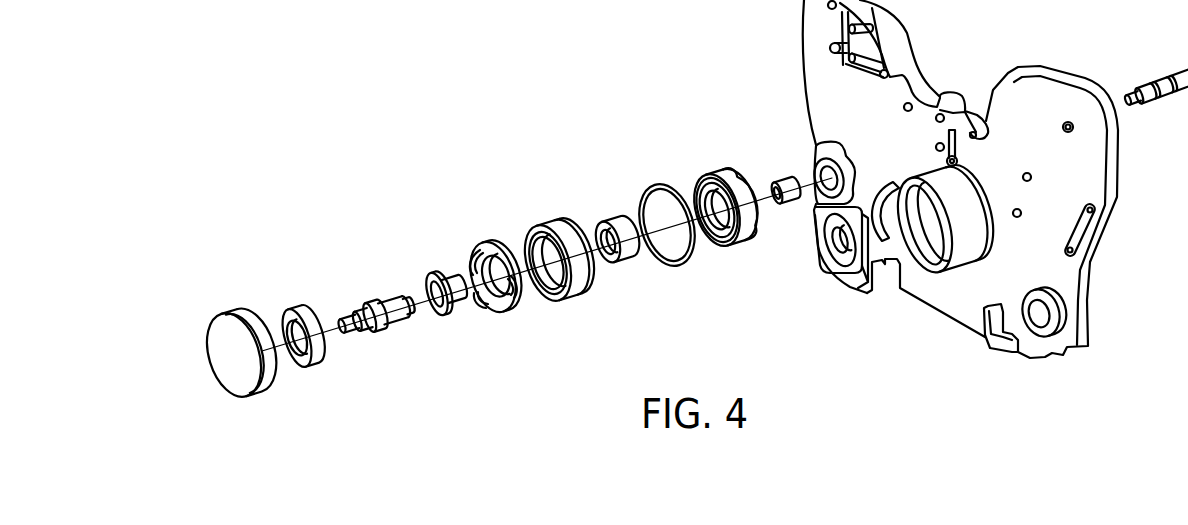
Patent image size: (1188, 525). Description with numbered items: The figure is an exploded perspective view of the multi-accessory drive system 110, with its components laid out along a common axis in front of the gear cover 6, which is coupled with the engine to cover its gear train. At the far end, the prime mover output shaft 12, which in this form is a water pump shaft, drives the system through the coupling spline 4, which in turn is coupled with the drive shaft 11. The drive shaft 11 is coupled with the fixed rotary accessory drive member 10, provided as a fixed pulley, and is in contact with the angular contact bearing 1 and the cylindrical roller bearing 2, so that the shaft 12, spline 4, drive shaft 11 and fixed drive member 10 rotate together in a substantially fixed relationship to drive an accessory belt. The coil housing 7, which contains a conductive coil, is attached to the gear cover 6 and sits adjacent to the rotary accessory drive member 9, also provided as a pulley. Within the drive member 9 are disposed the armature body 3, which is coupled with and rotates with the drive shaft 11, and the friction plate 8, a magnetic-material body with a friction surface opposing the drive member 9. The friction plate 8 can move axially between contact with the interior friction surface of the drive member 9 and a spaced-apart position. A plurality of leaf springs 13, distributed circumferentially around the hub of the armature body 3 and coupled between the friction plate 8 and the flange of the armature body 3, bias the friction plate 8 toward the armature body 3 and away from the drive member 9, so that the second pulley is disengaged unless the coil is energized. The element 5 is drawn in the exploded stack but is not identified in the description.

The angular contact bearing 1 is at (613, 219).
The cylindrical roller bearing 2 is at (295, 302).
The armature body 3 is at (429, 274).
The coupling spline 4 is at (779, 174).
The O-ring seal 5 is at (658, 180).
The gear cover 6 is at (831, 290).
The coil housing 7 is at (718, 166).
The friction plate 8 is at (489, 236).
The rotary accessory drive member 9 is at (553, 215).
The fixed rotary accessory drive member 10 is at (222, 308).
The drive shaft 11 is at (379, 290).
The prime mover output shaft 12 is at (1144, 82).
The springs 13 is at (467, 256).
The multi-accessory drive system 110 is at (979, 179).